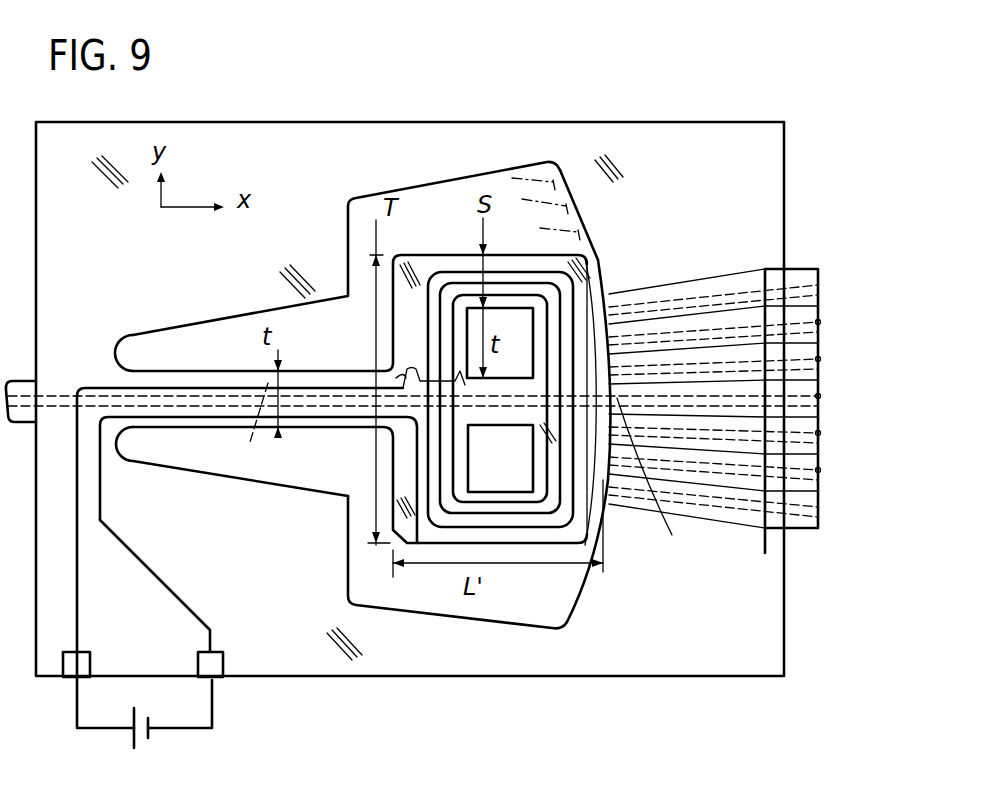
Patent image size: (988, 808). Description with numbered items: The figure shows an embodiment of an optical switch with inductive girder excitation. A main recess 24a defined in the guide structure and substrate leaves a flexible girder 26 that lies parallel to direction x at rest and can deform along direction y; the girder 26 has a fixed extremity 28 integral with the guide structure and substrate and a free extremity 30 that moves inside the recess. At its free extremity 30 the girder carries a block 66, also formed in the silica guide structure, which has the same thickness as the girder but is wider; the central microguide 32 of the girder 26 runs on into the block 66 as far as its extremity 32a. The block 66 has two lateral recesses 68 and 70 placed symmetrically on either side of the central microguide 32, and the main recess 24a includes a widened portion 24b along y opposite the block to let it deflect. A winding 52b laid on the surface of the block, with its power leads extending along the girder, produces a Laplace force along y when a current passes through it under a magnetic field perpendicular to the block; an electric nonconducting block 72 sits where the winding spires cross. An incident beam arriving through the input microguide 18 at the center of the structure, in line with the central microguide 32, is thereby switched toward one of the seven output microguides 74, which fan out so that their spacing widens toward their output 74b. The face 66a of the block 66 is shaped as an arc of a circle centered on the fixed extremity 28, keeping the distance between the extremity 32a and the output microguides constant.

The input microguide 18 is at (50, 396).
The flexible girder 26 is at (182, 370).
The fixed extremity 28 is at (128, 440).
The free extremity 30 is at (372, 372).
The central microguide 32 is at (233, 428).
The extremity of the central microguide 32a is at (675, 478).
The main recess 24a is at (290, 482).
The widened portion 24b is at (350, 572).
The winding 52b is at (443, 248).
The block 66 is at (583, 497).
The face of the block 66a is at (596, 290).
The lateral recess 68 is at (522, 317).
The lateral recess 70 is at (523, 490).
The electric nonconducting block 72 is at (405, 372).
The output microguides 74 is at (706, 276).
The output of the output microguides 74b is at (773, 260).